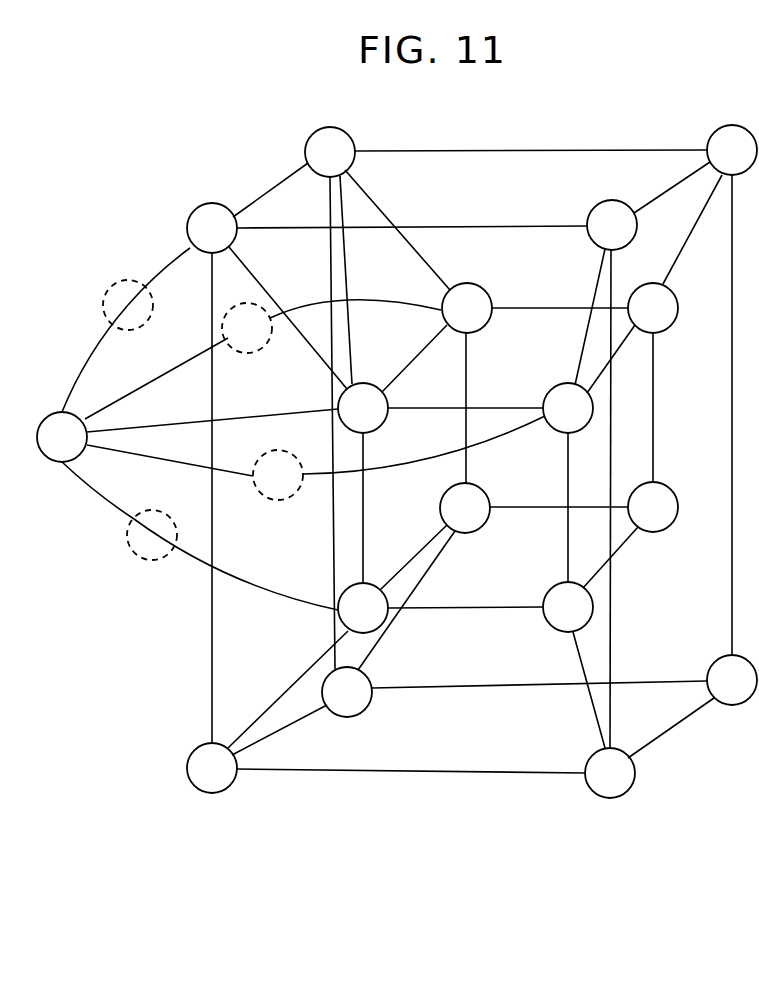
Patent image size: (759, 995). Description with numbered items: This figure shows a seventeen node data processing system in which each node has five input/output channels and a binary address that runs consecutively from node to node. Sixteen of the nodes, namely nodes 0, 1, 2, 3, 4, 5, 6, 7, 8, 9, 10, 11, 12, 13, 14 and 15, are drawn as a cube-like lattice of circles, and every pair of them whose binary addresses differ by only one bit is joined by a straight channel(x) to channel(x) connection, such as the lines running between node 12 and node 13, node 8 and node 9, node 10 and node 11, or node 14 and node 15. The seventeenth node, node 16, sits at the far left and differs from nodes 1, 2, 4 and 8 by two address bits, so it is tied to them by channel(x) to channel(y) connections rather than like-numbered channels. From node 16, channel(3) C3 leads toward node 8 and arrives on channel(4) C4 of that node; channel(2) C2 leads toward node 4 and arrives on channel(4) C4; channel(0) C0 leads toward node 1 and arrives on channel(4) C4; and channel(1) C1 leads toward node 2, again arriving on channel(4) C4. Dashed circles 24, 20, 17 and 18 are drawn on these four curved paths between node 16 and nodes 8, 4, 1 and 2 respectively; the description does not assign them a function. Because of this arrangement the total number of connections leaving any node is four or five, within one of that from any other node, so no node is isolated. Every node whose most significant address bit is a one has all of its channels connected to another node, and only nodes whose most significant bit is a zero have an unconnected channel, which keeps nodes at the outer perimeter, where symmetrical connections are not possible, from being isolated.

The node 0 is at (363, 408).
The node 1 is at (568, 408).
The node 2 is at (363, 608).
The node 3 is at (568, 607).
The node 4 is at (467, 308).
The node 5 is at (653, 308).
The node 6 is at (465, 508).
The node 7 is at (653, 507).
The node 8 is at (212, 228).
The node 9 is at (612, 225).
The node 10 is at (212, 768).
The node 11 is at (610, 773).
The node 12 is at (330, 152).
The node 13 is at (732, 150).
The node 14 is at (347, 692).
The node 15 is at (732, 680).
The node 16 is at (62, 437).
The virtual node 17 is at (278, 475).
The virtual node 18 is at (152, 535).
The virtual node 20 is at (247, 328).
The virtual node 24 is at (128, 305).
The channel(0) C0 is at (223, 473).
The channel(1) C1 is at (90, 490).
The channel(2) C2 is at (185, 353).
The channel(3) C3 is at (93, 335).
The channel(4) C4 is at (160, 260).